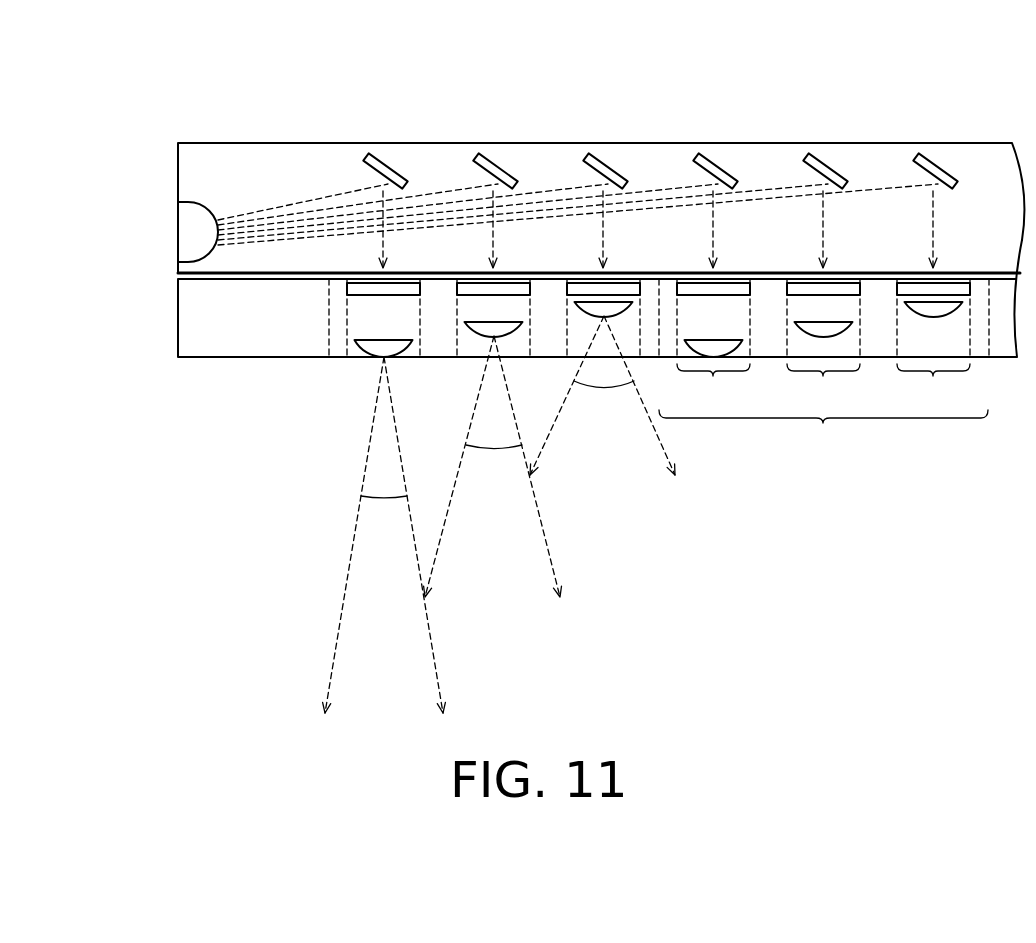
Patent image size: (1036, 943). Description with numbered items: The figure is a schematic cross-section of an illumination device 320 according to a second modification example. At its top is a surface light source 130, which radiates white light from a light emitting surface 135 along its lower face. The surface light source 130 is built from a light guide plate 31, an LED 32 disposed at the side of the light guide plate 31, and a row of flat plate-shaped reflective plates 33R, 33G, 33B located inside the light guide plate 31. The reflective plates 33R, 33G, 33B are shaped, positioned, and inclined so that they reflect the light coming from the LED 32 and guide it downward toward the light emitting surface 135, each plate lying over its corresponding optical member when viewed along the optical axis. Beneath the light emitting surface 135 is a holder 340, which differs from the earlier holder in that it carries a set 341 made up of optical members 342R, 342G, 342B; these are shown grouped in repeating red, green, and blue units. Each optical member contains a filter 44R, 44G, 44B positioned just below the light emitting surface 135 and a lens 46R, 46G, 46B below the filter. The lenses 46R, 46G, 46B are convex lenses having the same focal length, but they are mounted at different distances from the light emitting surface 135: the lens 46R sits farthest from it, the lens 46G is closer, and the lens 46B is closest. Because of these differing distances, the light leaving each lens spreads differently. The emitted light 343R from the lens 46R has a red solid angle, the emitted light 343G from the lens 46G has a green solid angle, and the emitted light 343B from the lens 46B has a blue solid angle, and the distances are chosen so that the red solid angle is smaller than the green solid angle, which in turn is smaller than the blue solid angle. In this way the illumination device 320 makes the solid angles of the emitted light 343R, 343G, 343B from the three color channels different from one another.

The illumination device 320 is at (87, 72).
The surface light source 130 is at (145, 161).
The light guide plate 31 is at (233, 157).
The LED 32 is at (190, 232).
The light emitting surface 135 is at (207, 287).
The holder 340 is at (192, 320).
The reflective plate 33R is at (381, 160).
The reflective plate 33G is at (491, 160).
The reflective plate 33B is at (601, 160).
The filter 44R is at (362, 289).
The filter 44G is at (472, 289).
The filter 44B is at (582, 289).
The lens 46R is at (410, 340).
The lens 46G is at (520, 322).
The lens 46B is at (630, 302).
The optical member 342R is at (548, 342).
The optical member 342G is at (658, 342).
The optical member 342B is at (768, 342).
The set 341 is at (659, 365).
The emitted light 343R is at (337, 645).
The emitted light 343G is at (550, 557).
The emitted light 343B is at (662, 444).